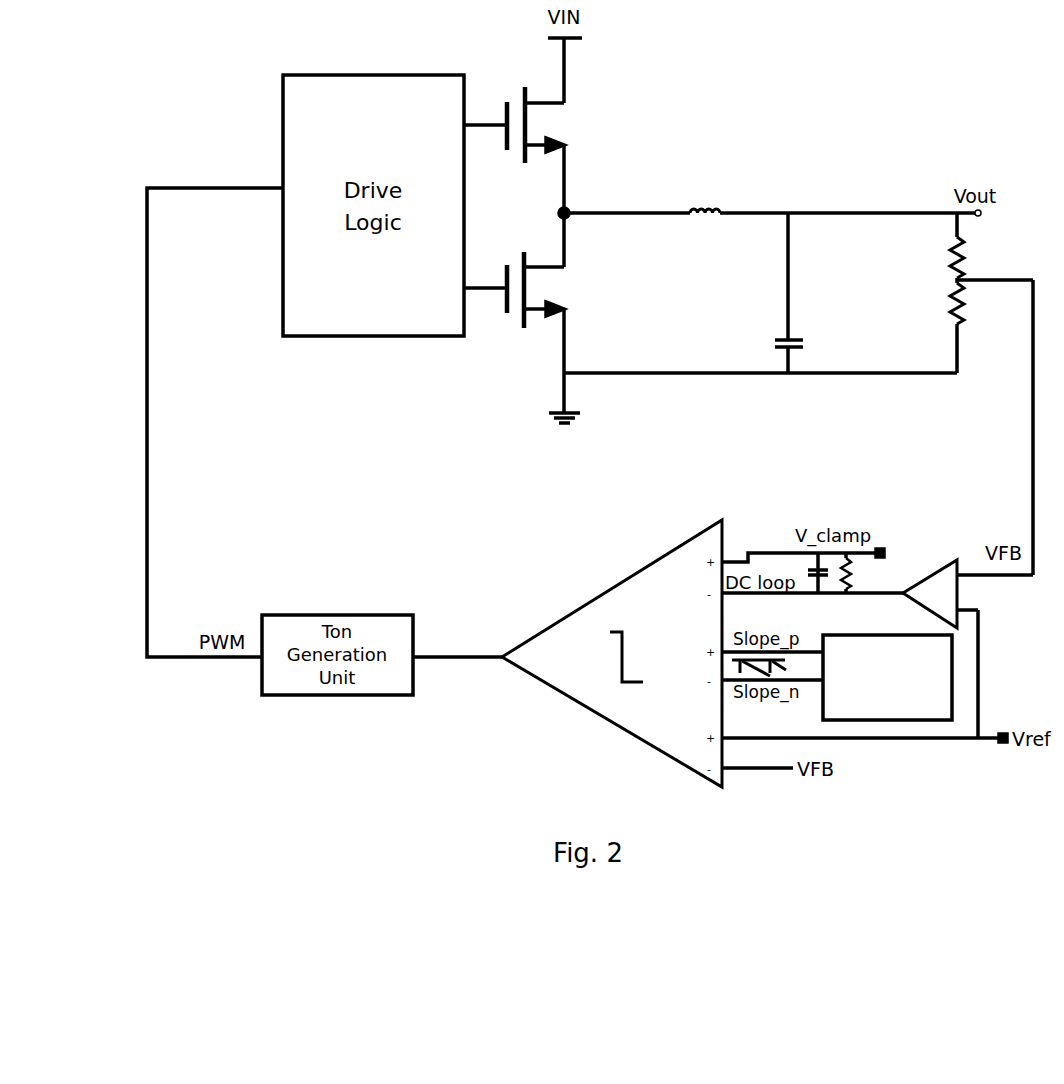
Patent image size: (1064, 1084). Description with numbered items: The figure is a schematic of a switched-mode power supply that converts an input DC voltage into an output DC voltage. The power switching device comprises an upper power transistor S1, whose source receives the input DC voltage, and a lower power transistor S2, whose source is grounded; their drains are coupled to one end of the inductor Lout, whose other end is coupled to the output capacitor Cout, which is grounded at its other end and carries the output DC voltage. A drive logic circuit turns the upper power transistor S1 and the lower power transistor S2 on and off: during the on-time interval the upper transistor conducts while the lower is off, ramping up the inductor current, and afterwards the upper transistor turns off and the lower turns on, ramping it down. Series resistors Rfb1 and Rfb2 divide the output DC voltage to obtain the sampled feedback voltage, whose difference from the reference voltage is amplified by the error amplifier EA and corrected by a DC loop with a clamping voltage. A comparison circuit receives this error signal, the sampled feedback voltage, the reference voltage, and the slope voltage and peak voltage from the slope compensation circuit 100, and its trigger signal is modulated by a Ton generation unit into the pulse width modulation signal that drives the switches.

The slope compensation circuit 100 is at (947, 663).
The upper power transistor S1 is at (542, 125).
The lower power transistor S2 is at (542, 290).
The inductor Lout is at (704, 196).
The output capacitor Cout is at (764, 293).
The series resistor Rfb1 is at (930, 260).
The series resistor Rfb2 is at (930, 303).
The error amplifier EA is at (930, 594).